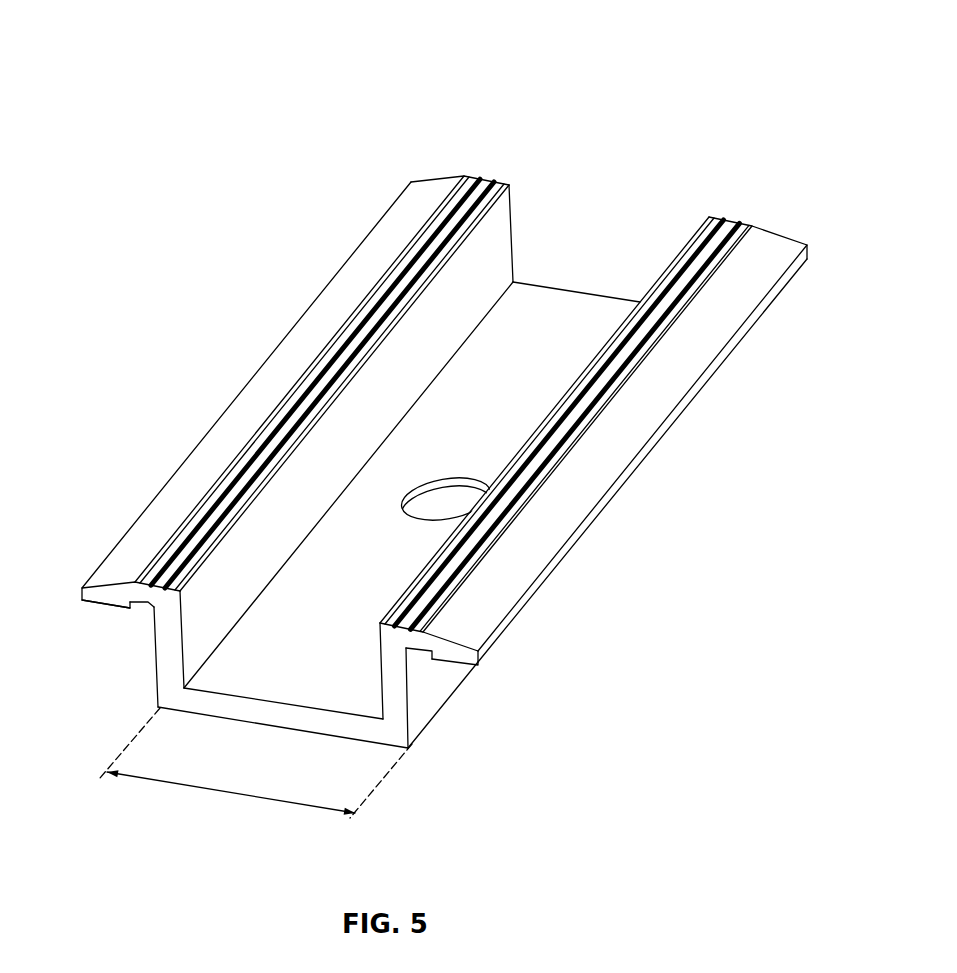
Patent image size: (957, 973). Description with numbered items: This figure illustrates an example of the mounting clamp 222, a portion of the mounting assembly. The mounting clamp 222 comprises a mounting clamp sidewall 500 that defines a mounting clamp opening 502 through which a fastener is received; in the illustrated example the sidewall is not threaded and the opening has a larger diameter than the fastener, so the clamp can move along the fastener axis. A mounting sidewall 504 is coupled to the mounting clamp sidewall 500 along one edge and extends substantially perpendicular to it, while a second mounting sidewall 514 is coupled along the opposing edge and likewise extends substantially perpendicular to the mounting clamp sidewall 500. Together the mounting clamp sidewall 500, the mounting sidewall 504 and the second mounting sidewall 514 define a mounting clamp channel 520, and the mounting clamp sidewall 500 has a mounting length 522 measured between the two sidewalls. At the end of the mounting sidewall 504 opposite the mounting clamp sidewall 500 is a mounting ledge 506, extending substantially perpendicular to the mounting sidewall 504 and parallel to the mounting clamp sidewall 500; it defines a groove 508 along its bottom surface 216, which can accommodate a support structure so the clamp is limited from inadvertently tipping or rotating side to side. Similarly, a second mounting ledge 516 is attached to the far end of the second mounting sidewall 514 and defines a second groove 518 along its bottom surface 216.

The mounting clamp 222 is at (311, 42).
The mounting clamp sidewall 500 is at (562, 323).
The mounting clamp opening 502 is at (447, 512).
The mounting sidewall 504 is at (398, 710).
The mounting ledge 506 is at (482, 617).
The groove 508 is at (418, 641).
The second mounting sidewall 514 is at (167, 663).
The second mounting ledge 516 is at (103, 578).
The second groove 518 is at (149, 598).
The mounting clamp channel 520 is at (284, 691).
The mounting length 522 is at (222, 793).
The bottom surface 216 is at (101, 601).